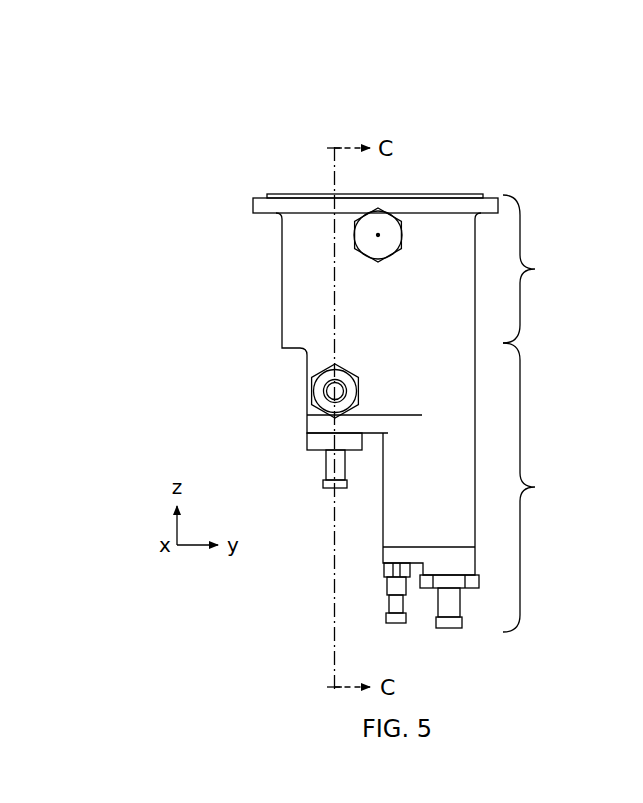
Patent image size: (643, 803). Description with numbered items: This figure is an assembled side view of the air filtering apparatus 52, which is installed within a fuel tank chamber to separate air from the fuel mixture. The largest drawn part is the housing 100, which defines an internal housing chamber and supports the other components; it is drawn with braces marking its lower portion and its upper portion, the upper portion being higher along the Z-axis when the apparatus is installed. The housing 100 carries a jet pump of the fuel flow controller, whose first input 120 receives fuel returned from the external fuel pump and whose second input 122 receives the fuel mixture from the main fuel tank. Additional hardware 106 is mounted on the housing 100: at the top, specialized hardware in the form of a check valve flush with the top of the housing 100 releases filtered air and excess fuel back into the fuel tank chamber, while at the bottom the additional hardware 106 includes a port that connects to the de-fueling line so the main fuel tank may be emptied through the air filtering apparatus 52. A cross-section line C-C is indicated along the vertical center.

The air filtering apparatus 52 is at (265, 80).
The housing 100 is at (290, 318).
The additional hardware 106 is at (383, 213).
The first input 120 is at (324, 477).
The second input 122 is at (320, 392).